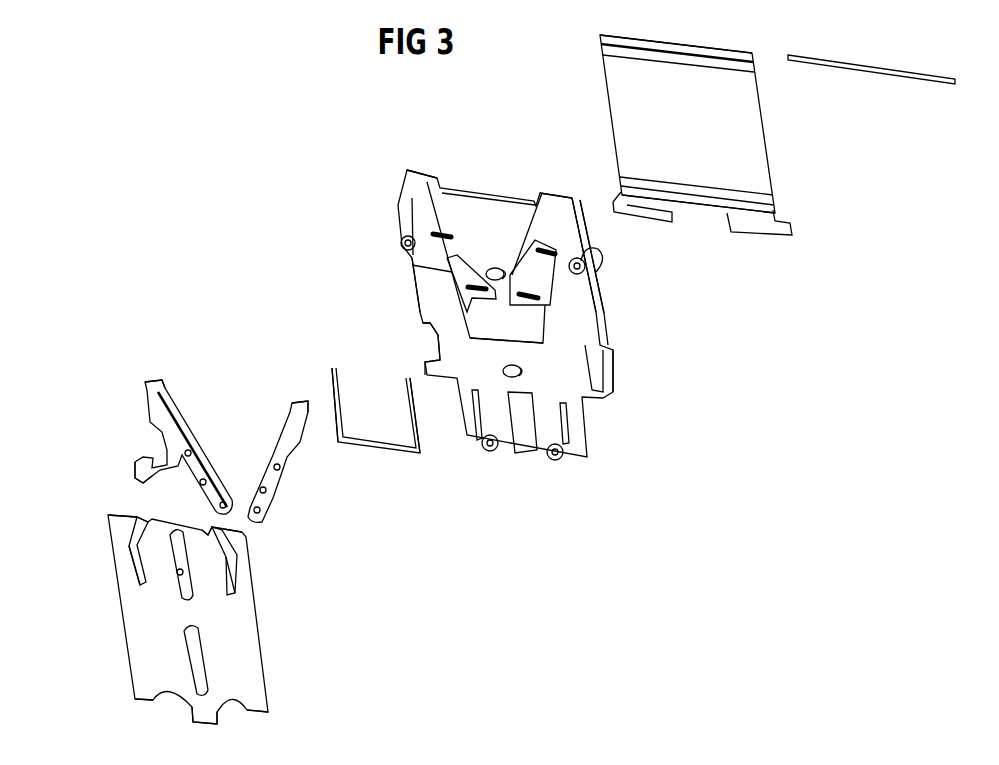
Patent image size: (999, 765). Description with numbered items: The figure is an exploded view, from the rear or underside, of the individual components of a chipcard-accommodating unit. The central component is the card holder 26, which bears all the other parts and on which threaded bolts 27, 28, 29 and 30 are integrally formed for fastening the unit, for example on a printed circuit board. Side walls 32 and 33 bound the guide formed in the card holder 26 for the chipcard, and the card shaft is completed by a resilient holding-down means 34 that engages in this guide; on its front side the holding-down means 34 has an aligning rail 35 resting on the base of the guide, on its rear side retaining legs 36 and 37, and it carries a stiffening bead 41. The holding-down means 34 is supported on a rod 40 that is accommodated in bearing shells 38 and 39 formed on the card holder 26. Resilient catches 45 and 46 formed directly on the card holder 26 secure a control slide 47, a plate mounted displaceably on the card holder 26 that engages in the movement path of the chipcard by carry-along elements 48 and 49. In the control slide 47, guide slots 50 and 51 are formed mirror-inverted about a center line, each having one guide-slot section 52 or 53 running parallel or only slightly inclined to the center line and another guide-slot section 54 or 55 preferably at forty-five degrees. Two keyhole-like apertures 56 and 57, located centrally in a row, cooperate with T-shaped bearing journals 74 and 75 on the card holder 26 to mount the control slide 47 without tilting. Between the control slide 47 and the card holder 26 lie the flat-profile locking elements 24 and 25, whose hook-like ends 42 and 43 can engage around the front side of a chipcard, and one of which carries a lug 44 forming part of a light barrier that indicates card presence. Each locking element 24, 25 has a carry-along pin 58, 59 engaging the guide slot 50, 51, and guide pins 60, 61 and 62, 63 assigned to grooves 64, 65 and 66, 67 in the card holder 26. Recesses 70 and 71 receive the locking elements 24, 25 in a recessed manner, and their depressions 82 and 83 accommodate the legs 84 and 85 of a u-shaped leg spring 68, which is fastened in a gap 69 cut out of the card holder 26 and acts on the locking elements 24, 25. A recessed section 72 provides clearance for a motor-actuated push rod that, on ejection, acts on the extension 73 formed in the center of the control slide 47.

The locking element 24 is at (149, 401).
The locking element 25 is at (292, 402).
The card holder 26 is at (640, 413).
The threaded bolt 27 is at (402, 241).
The threaded bolt 28 is at (598, 262).
The threaded bolt 29 is at (560, 462).
The threaded bolt 30 is at (491, 452).
The side wall 32 is at (408, 170).
The side wall 33 is at (573, 197).
The holding-down means 34 is at (781, 136).
The aligning rail 35 is at (700, 48).
The retaining leg 36 is at (648, 213).
The retaining leg 37 is at (765, 230).
The bearing shell 38 is at (428, 350).
The bearing shell 39 is at (598, 366).
The rod 40 is at (906, 73).
The stiffening bead 41 is at (708, 200).
The end 42 is at (168, 387).
The end 43 is at (305, 404).
The lug 44 is at (145, 455).
The catch 45 is at (472, 430).
The catch 46 is at (586, 440).
The control slide 47 is at (100, 647).
The carry-along element 48 is at (150, 702).
The carry-along element 49 is at (278, 707).
The guide slot 50 is at (128, 566).
The guide slot 51 is at (236, 575).
The guide-slot section 52 is at (138, 578).
The guide-slot section 53 is at (236, 594).
The guide-slot section 54 is at (134, 546).
The guide-slot section 55 is at (222, 547).
The keyhole-like aperture 56 is at (183, 590).
The keyhole-like aperture 57 is at (203, 655).
The carry-along pin 58 is at (207, 479).
The carry-along pin 59 is at (272, 488).
The guide pin 60 is at (190, 450).
The guide pin 61 is at (226, 502).
The guide pin 62 is at (286, 464).
The guide pin 63 is at (264, 509).
The groove 64 is at (441, 232).
The groove 65 is at (470, 295).
The groove 66 is at (546, 249).
The groove 67 is at (535, 313).
The leg spring 68 is at (380, 454).
The gap 69 is at (508, 349).
The recess 70 is at (430, 266).
The recess 71 is at (552, 268).
The recessed section 72 is at (521, 423).
The extension 73 is at (204, 718).
The T-shaped bearing journal 74 is at (494, 268).
The T-shaped bearing journal 75 is at (520, 378).
The depression 82 is at (462, 280).
The depression 83 is at (548, 275).
The leg 84 is at (342, 415).
The leg 85 is at (413, 438).